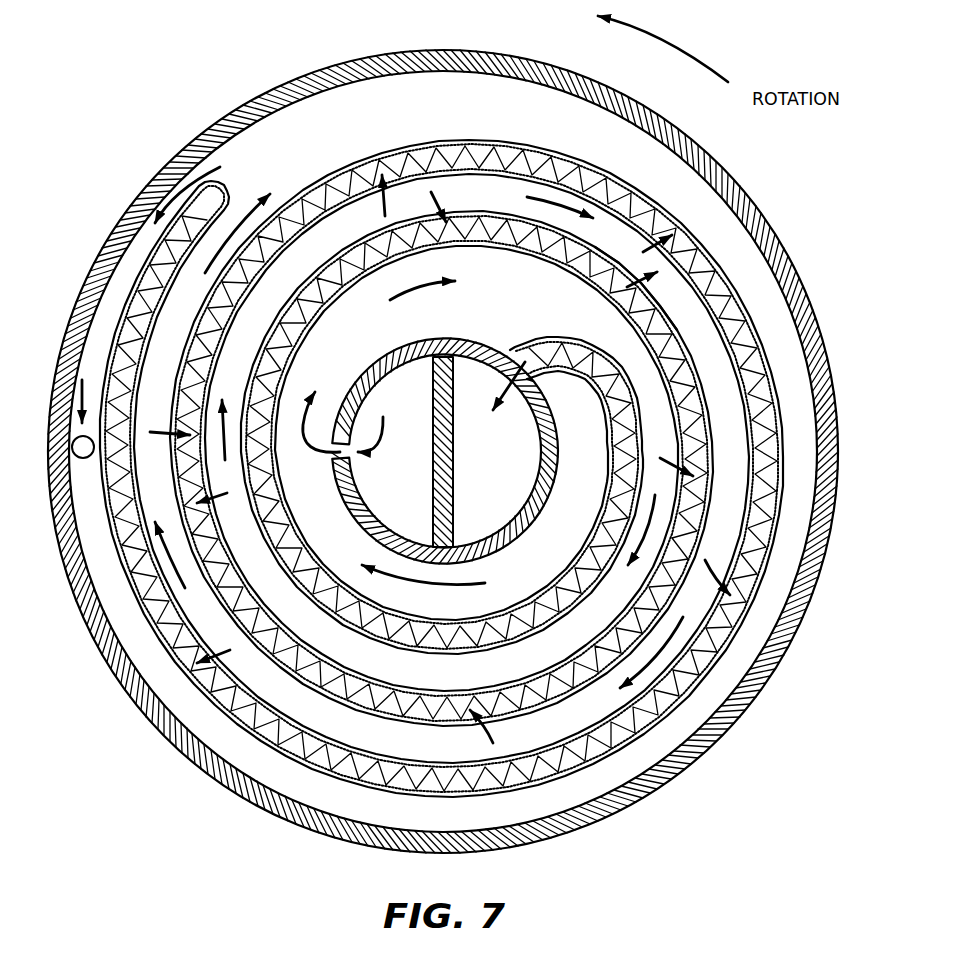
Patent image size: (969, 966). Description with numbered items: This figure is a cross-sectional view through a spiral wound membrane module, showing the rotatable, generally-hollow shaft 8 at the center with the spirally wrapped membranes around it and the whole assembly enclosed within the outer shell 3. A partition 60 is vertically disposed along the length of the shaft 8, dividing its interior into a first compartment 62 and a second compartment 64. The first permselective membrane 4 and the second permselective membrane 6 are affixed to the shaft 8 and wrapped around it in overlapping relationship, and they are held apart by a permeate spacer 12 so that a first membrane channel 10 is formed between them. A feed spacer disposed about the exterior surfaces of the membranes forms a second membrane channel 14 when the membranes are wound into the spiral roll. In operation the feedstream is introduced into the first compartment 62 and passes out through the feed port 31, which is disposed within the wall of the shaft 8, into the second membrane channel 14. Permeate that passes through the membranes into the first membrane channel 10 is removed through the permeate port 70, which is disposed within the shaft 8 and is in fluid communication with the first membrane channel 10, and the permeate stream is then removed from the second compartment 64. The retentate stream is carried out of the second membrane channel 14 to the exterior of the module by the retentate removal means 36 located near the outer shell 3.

The outer shell 3 is at (840, 522).
The first permselective membrane 4 is at (784, 437).
The second permselective membrane 6 is at (751, 418).
The shaft 8 is at (468, 340).
The first membrane channel 10 is at (752, 366).
The permeate spacer 12 is at (680, 257).
The second membrane channel 14 is at (479, 206).
The feed port 31 is at (338, 453).
The means for removal of a retentate stream 36 is at (83, 458).
The partition 60 is at (433, 472).
The first compartment 62 is at (418, 404).
The second compartment 64 is at (500, 503).
The permeate port 70 is at (513, 345).